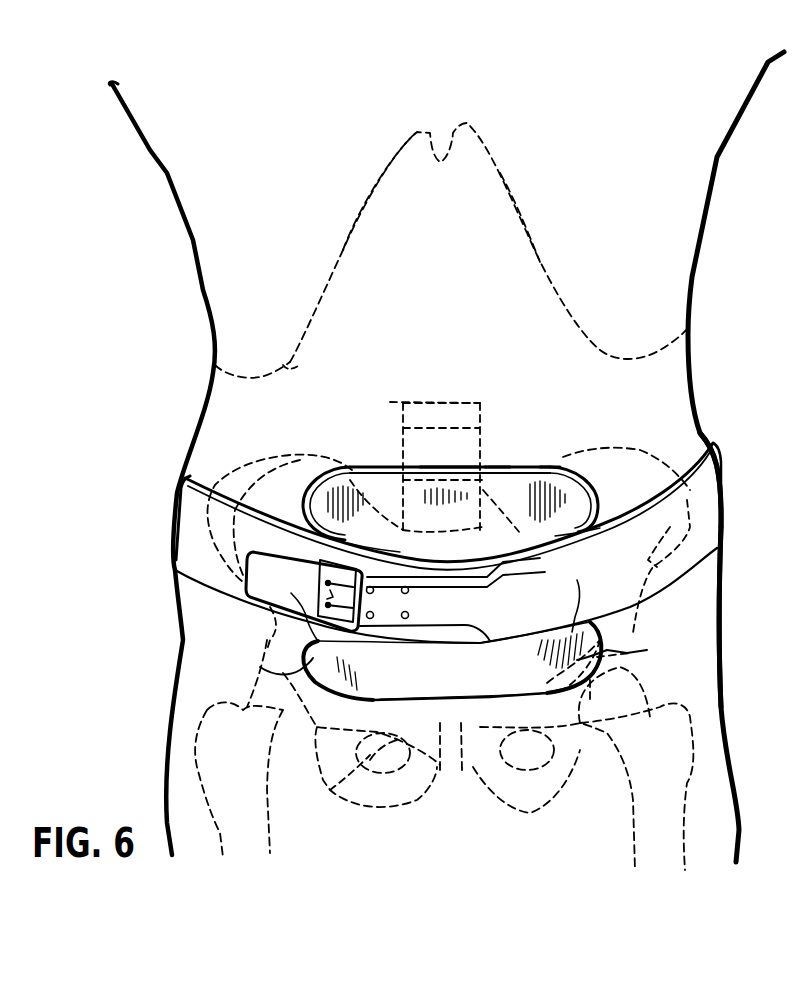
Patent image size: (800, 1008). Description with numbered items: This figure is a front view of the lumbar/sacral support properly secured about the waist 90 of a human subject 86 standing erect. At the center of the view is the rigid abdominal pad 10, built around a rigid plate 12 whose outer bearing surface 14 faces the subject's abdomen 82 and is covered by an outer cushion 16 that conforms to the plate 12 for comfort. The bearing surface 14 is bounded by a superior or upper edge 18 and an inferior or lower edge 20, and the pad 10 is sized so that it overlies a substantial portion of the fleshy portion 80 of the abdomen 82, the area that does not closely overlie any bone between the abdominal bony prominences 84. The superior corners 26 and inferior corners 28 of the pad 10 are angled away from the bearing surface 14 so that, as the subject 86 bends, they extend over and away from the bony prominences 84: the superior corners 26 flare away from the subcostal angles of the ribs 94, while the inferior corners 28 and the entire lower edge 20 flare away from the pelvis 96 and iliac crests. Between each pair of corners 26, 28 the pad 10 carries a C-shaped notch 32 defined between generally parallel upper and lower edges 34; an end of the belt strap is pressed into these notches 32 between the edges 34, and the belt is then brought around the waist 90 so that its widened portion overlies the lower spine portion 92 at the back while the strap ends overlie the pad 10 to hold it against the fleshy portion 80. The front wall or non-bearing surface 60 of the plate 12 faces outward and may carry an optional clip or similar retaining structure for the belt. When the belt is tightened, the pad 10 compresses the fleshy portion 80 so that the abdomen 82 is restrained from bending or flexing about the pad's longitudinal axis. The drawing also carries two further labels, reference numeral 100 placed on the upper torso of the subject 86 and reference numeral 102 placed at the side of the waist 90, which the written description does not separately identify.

The rigid abdominal pad 10 is at (530, 467).
The rigid plate 12 is at (455, 485).
The outer bearing surface 14 is at (393, 468).
The outer cushion 16 is at (556, 467).
The superior or upper edge 18 is at (490, 467).
The inferior or lower edge 20 is at (467, 699).
The superior corners 26 is at (311, 490).
The inferior corners 28 is at (455, 668).
The C-shaped notches 32 is at (345, 540).
The upper and lower edges of notches 34 is at (572, 536).
The front wall or non-bearing surface 60 is at (415, 683).
The fleshy portion of abdomen 80 is at (353, 457).
The abdomen 82 is at (491, 379).
The abdominal bony prominences 84 is at (455, 805).
The human subject 86 is at (704, 233).
The waist 90 is at (710, 434).
The lower spine portion 92 is at (402, 406).
The ribs 94 is at (342, 248).
The pelvis 96 is at (330, 790).
The wearer's body 100 is at (588, 131).
The hip 102 is at (723, 550).